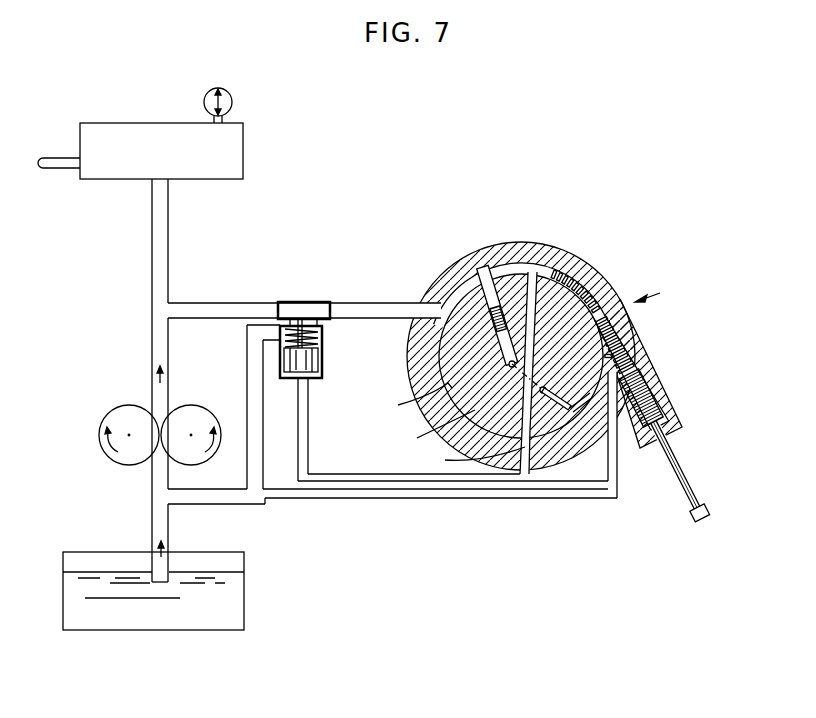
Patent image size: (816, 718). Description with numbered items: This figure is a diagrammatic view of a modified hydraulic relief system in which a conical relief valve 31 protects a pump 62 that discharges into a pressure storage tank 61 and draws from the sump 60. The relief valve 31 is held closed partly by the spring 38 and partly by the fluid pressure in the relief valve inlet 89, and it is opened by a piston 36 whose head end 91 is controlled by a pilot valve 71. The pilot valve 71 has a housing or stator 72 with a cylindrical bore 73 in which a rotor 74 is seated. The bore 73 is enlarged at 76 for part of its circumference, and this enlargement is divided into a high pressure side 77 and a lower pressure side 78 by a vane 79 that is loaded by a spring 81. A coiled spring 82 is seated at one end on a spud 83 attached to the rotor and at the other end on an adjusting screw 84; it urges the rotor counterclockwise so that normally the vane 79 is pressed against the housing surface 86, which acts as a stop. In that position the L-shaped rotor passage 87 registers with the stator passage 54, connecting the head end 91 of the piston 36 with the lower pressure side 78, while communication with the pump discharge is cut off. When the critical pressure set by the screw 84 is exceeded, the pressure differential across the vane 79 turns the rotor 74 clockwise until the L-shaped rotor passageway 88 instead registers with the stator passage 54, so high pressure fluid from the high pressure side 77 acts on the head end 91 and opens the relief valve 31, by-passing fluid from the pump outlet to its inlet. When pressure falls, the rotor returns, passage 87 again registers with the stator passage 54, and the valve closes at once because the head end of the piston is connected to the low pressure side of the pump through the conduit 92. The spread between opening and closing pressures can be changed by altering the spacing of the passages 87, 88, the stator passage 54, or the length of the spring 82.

The relief valve 31 is at (304, 315).
The piston 36 is at (308, 366).
The spring 38 is at (321, 340).
The stator passage 54 is at (473, 459).
The sump 60 is at (235, 603).
The pressure storage tank 61 is at (226, 176).
The pump 62 is at (185, 397).
The pilot valve 71 is at (661, 291).
The housing or stator 72 is at (515, 242).
The cylindrical bore 73 is at (413, 399).
The rotor 74 is at (434, 429).
The enlargement of the bore 76 is at (540, 270).
The high pressure side 77 is at (455, 293).
The lower pressure side 78 is at (524, 268).
The vane 79 is at (492, 268).
The spring 81 is at (485, 346).
The coiled spring 82 is at (623, 353).
The spud 83 is at (552, 268).
The adjusting screw 84 is at (647, 410).
The housing surface 86 is at (458, 253).
The L-shaped rotor passage 87 is at (532, 420).
The L-shaped rotor passageway 88 is at (488, 350).
The relief valve inlet 89 is at (250, 313).
The head end 91 is at (310, 375).
The conduit 92 is at (448, 495).